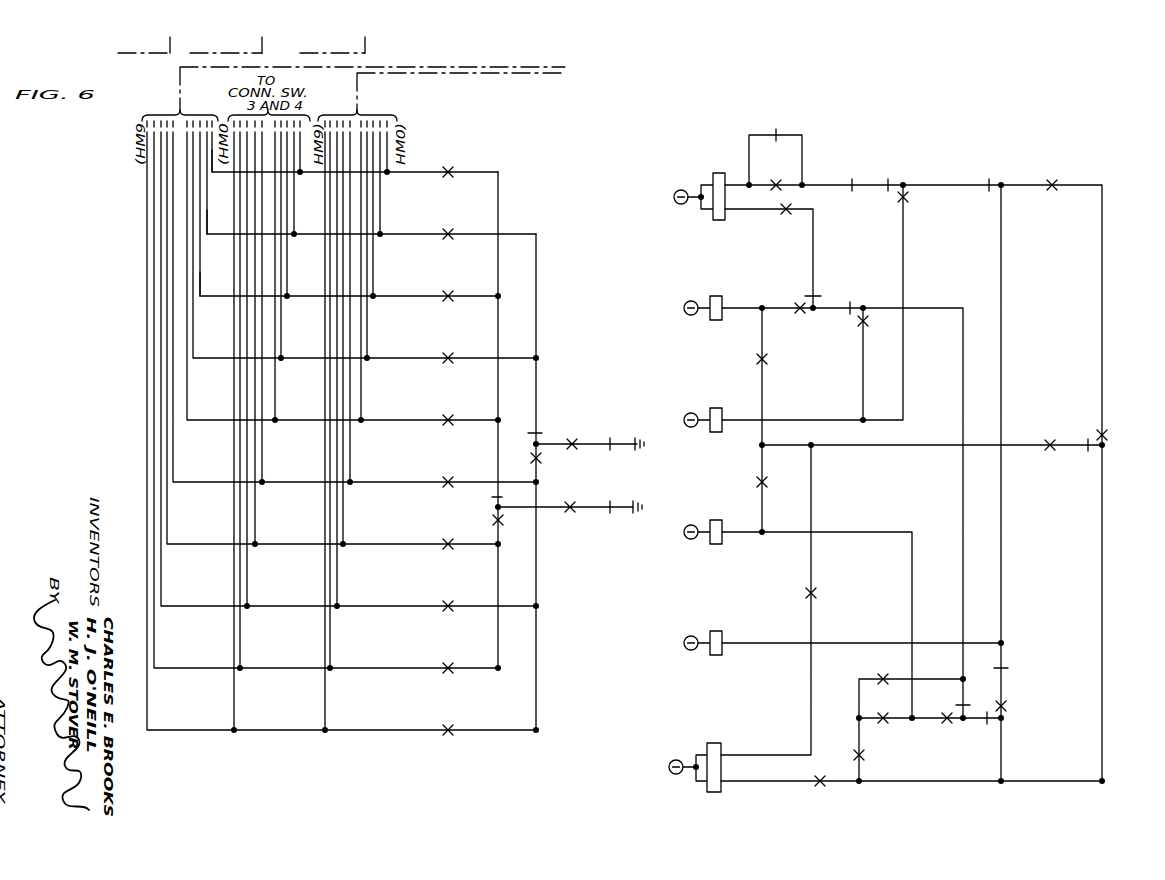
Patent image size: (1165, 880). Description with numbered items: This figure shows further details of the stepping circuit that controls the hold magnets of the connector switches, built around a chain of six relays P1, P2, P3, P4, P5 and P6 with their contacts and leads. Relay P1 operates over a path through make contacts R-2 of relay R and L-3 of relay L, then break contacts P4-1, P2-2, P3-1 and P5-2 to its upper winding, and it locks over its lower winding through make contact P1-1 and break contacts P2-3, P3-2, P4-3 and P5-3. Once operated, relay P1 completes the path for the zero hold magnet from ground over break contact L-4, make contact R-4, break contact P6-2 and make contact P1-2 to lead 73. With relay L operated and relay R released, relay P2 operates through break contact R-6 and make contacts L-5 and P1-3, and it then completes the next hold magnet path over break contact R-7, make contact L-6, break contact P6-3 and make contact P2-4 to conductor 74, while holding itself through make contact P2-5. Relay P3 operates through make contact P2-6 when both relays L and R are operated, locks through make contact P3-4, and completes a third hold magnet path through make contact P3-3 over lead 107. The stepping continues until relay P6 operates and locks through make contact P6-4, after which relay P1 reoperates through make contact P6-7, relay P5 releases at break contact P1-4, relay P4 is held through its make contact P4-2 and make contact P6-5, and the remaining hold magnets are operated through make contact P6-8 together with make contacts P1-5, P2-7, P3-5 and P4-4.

The lead 73 is at (226, 174).
The conductor 74 is at (221, 236).
The lead 107 is at (219, 298).
The relay P1 is at (726, 178).
The relay P2 is at (725, 302).
The relay P3 is at (721, 415).
The relay P4 is at (947, 714).
The relay P5 is at (722, 637).
The relay P6 is at (721, 750).
The make contact P1-1 is at (782, 219).
The make contact P1-2 is at (355, 149).
The make contact P1-3 is at (780, 360).
The break contact P1-4 is at (1008, 668).
The make contact P1-5 is at (332, 335).
The break contact P2-2 is at (889, 181).
The break contact P2-3 is at (805, 293).
The make contact P2-4 is at (371, 180).
The make contact P2-5 is at (800, 313).
The make contact P2-6 is at (909, 199).
The make contact P2-7 is at (348, 366).
The break contact P3-1 is at (851, 178).
The break contact P3-2 is at (855, 296).
The make contact P3-3 is at (349, 211).
The make contact P3-4 is at (860, 323).
The make contact P3-5 is at (326, 397).
The break contact P4-1 is at (992, 176).
The make contact P4-2 is at (882, 711).
The contact P4-3 is at (968, 712).
The make contact P4-4 is at (341, 428).
The break contact P5-2 is at (777, 125).
The contact P5-3 is at (987, 755).
The break contact P6-2 is at (492, 497).
The break contact P6-3 is at (537, 432).
The make contact P6-4 is at (821, 773).
The make contact P6-5 is at (877, 753).
The make contact P6-7 is at (779, 177).
The make contact P6-8 is at (493, 519).
The make contact L-3 is at (1051, 175).
The break contact L-4 is at (621, 499).
The make contact L-5 is at (1046, 437).
The make contact L-6 is at (586, 436).
The make contact R-2 is at (1110, 436).
The make contact R-4 is at (565, 499).
The break contact R-6 is at (1083, 452).
The break contact R-7 is at (622, 436).